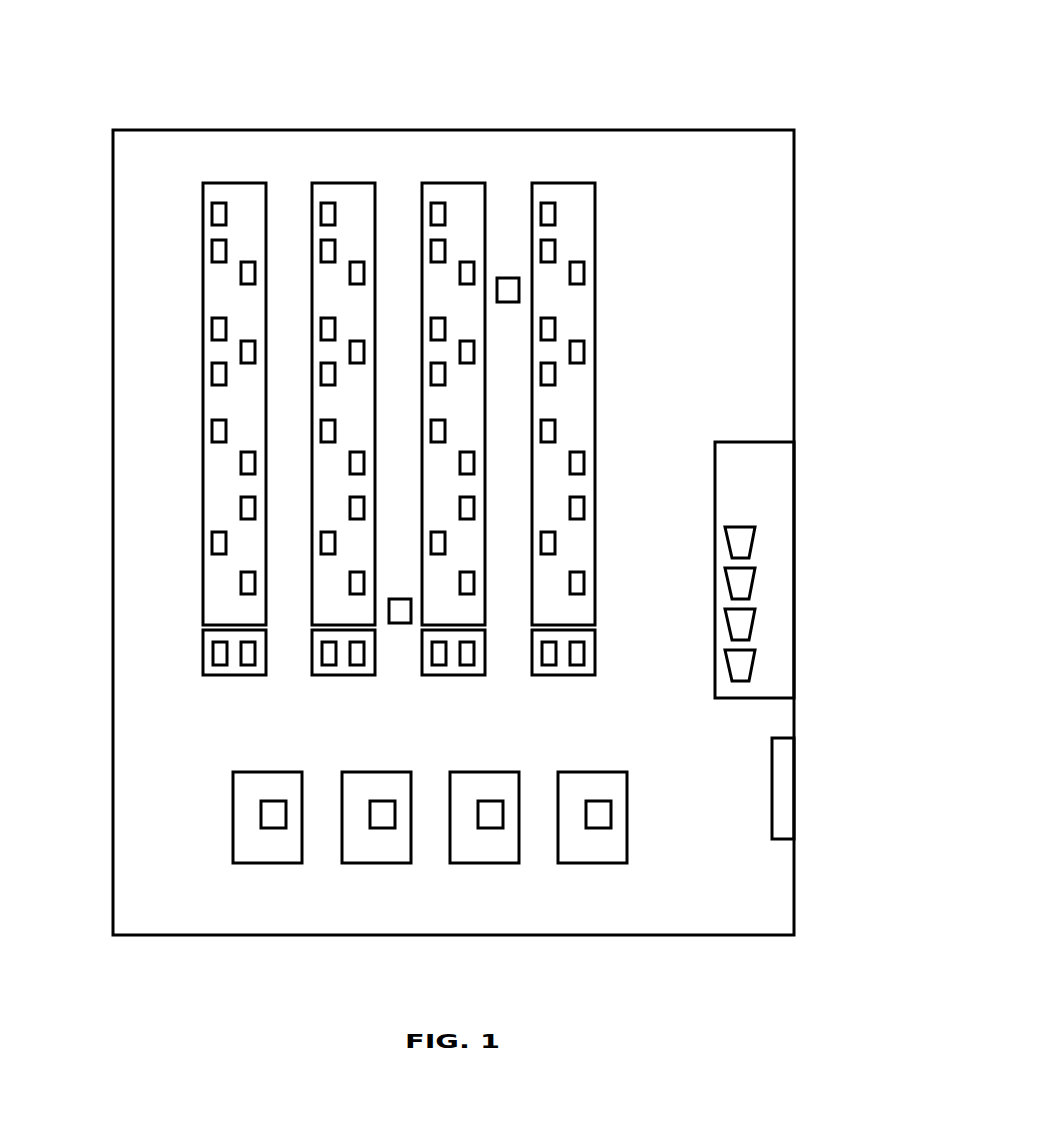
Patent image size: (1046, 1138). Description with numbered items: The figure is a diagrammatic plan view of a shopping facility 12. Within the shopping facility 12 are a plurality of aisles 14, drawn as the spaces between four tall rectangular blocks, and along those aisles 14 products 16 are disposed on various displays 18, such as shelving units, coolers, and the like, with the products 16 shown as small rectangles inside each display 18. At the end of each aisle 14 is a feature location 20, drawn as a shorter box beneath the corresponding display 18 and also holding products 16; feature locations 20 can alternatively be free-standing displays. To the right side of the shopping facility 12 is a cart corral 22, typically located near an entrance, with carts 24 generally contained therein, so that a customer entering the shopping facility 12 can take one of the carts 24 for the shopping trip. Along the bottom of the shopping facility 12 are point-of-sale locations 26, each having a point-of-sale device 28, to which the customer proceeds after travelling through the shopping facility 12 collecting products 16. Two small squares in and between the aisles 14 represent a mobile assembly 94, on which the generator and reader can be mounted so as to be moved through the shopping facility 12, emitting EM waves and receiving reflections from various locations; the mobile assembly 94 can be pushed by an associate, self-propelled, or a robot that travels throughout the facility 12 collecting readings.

The shopping facility 12 is at (697, 97).
The aisles 14 is at (452, 534).
The products 16 is at (548, 205).
The displays 18 is at (231, 183).
The feature locations 20 is at (203, 648).
The cart corral 22 is at (762, 442).
The carts 24 is at (752, 543).
The point-of-sale locations 26 is at (265, 863).
The point-of-sale devices 28 is at (380, 828).
The mobile assembly 94 is at (508, 278).